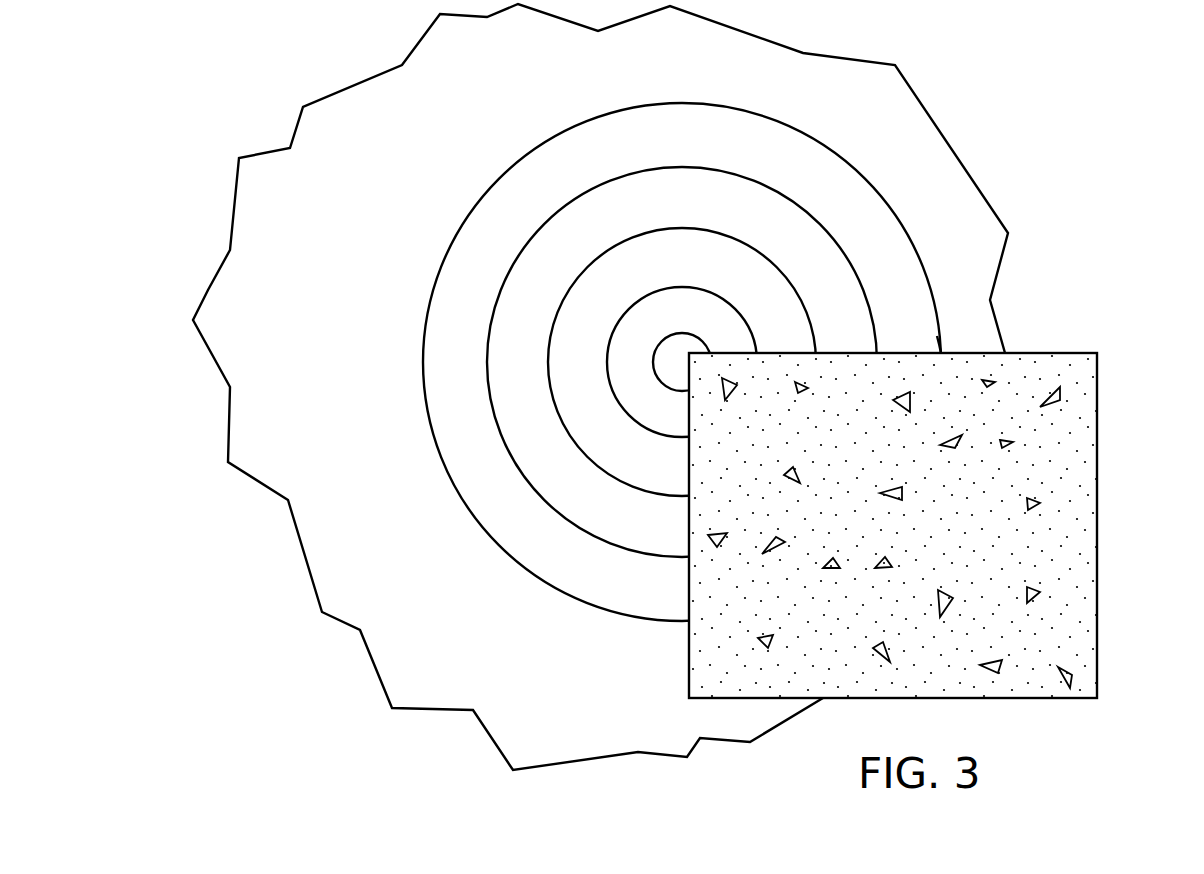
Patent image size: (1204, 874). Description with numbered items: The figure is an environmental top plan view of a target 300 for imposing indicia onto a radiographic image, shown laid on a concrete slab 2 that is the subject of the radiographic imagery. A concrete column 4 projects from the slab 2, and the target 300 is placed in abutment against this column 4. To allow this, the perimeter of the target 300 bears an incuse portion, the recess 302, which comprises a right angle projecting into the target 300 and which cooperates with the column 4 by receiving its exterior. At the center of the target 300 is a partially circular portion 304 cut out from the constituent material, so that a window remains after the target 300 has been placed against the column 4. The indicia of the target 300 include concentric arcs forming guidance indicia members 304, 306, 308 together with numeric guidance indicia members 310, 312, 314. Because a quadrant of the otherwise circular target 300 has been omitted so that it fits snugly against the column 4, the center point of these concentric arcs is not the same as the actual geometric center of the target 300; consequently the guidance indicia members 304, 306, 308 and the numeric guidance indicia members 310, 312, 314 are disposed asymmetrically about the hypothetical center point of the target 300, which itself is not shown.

The concrete slab 2 is at (332, 283).
The concrete column 4 is at (1097, 476).
The target 300 is at (551, 112).
The recess 302 is at (857, 353).
The partially circular portion 304 is at (657, 447).
The guidance indicia member 306 is at (600, 470).
The guidance indicia member 308 is at (520, 474).
The numeric guidance indicia member 310 is at (618, 390).
The numeric guidance indicia member 312 is at (560, 386).
The numeric guidance indicia member 314 is at (498, 362).